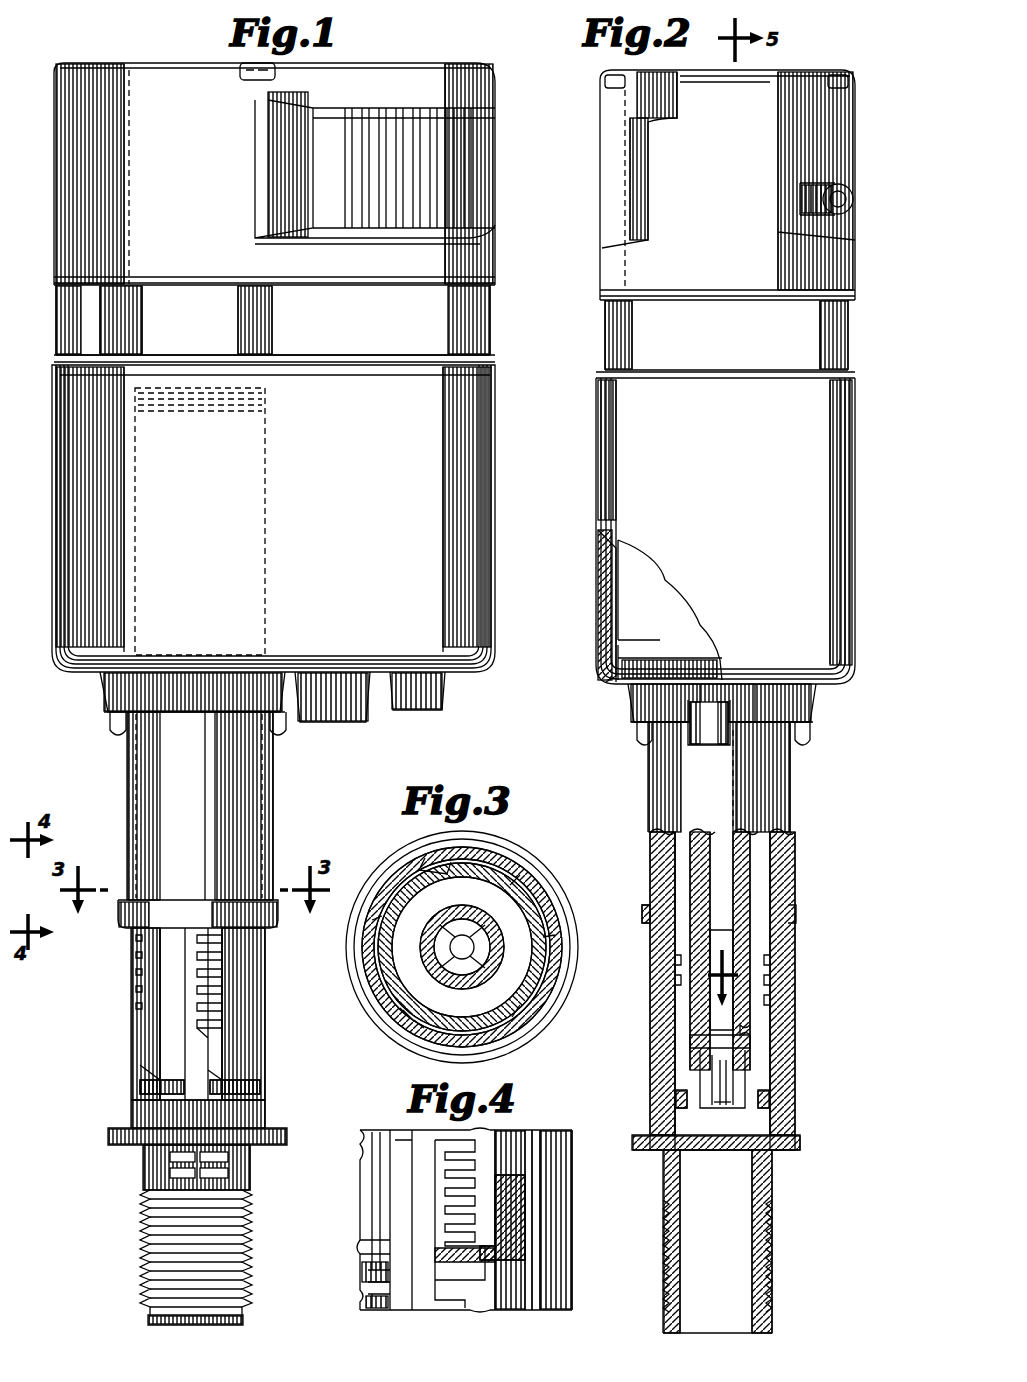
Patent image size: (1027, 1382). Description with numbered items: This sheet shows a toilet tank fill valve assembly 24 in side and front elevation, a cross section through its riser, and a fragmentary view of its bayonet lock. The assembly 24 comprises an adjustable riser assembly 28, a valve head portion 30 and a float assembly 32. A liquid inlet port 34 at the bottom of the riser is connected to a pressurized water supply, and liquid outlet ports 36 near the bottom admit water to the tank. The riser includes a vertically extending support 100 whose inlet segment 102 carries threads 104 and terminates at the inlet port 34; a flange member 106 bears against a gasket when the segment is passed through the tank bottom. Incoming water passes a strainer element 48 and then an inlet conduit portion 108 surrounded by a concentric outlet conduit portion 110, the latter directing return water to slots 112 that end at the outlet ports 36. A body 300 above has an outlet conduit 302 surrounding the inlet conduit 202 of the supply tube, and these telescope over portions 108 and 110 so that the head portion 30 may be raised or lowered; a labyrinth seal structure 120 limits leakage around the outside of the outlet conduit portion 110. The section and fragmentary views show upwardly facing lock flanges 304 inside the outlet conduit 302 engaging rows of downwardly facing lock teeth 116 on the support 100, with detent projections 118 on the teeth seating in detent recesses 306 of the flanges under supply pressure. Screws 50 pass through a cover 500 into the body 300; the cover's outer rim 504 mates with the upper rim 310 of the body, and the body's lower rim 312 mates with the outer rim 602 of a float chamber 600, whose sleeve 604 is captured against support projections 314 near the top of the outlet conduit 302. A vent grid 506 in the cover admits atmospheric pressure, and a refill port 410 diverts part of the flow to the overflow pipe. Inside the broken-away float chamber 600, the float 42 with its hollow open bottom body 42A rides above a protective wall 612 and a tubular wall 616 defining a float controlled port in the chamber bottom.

In FIG. 1, the assembly 24 is at (452, 49).
In FIG. 2, the assembly 24 is at (804, 51).
In FIG. 1, the adjustable riser assembly 28 is at (110, 1006).
In FIG. 2, the adjustable riser assembly 28 is at (804, 880).
In FIG. 3, the adjustable riser assembly 28 is at (527, 834).
In FIG. 1, the valve head portion 30 is at (54, 84).
In FIG. 2, the valve head portion 30 is at (588, 138).
In FIG. 2, the float assembly 32 is at (604, 670).
In FIG. 1, the liquid inlet port 34 is at (148, 1324).
In FIG. 2, the liquid inlet port 34 is at (756, 1326).
In FIG. 1, the liquid outlet ports 36 is at (139, 1088).
In FIG. 2, the liquid outlet ports 36 is at (656, 1093).
In FIG. 2, the float 42 is at (606, 572).
In FIG. 2, the hollow open bottom body 42A is at (612, 594).
In FIG. 2, the strainer element 48 is at (723, 1074).
In FIG. 1, the screws 50 is at (240, 70).
In FIG. 2, the screws 50 is at (605, 78).
In FIG. 1, the support 100 is at (264, 1008).
In FIG. 2, the support 100 is at (780, 1000).
In FIG. 3, the support 100 is at (345, 888).
In FIG. 4, the support 100 is at (390, 1122).
In FIG. 1, the inlet segment 102 is at (143, 1184).
In FIG. 2, the inlet segment 102 is at (778, 1178).
In FIG. 1, the threads 104 is at (135, 1254).
In FIG. 2, the threads 104 is at (770, 1242).
In FIG. 1, the flange member 106 is at (108, 1142).
In FIG. 2, the flange member 106 is at (800, 1145).
In FIG. 1, the inlet conduit portion 108 is at (158, 1076).
In FIG. 2, the inlet conduit portion 108 is at (775, 948).
In FIG. 3, the inlet conduit portion 108 is at (484, 912).
In FIG. 1, the outlet conduit portion 110 is at (243, 1038).
In FIG. 2, the outlet conduit portion 110 is at (772, 1012).
In FIG. 3, the outlet conduit portion 110 is at (518, 860).
In FIG. 4, the outlet conduit portion 110 is at (503, 1126).
In FIG. 2, the slots 112 is at (780, 1034).
In FIG. 3, the slots 112 is at (408, 1025).
In FIG. 1, the lock teeth 116 is at (143, 992).
In FIG. 2, the lock teeth 116 is at (650, 985).
In FIG. 3, the lock teeth 116 is at (434, 840).
In FIG. 4, the lock teeth 116 is at (498, 1200).
In FIG. 4, the detent projections 118 is at (410, 1178).
In FIG. 1, the labyrinth seal structure 120 is at (270, 394).
In FIG. 2, the inlet conduit 202 is at (748, 860).
In FIG. 3, the inlet conduit 202 is at (450, 962).
In FIG. 1, the body 300 is at (54, 346).
In FIG. 2, the body 300 is at (848, 348).
In FIG. 1, the outlet conduit 302 is at (126, 792).
In FIG. 2, the outlet conduit 302 is at (795, 816).
In FIG. 3, the outlet conduit 302 is at (552, 1022).
In FIG. 4, the outlet conduit 302 is at (360, 1152).
In FIG. 2, the lock flanges 304 is at (791, 918).
In FIG. 3, the lock flanges 304 is at (576, 926).
In FIG. 4, the lock flanges 304 is at (376, 1260).
In FIG. 4, the detent recesses 306 is at (426, 1240).
In FIG. 1, the upper rim 310 is at (498, 286).
In FIG. 2, the upper rim 310 is at (855, 292).
In FIG. 1, the lower rim 312 is at (498, 362).
In FIG. 2, the lower rim 312 is at (852, 378).
In FIG. 1, the support projections 314 is at (112, 720).
In FIG. 2, the support projections 314 is at (642, 740).
In FIG. 2, the refill port 410 is at (842, 180).
In FIG. 1, the cover 500 is at (54, 194).
In FIG. 2, the cover 500 is at (856, 150).
In FIG. 1, the outer rim 504 is at (52, 280).
In FIG. 2, the outer rim 504 is at (596, 280).
In FIG. 1, the vent grid 506 is at (412, 106).
In FIG. 1, the float chamber 600 is at (54, 574).
In FIG. 2, the float chamber 600 is at (848, 560).
In FIG. 1, the outer rim 602 is at (52, 375).
In FIG. 2, the outer rim 602 is at (598, 388).
In FIG. 1, the sleeve 604 is at (102, 706).
In FIG. 2, the sleeve 604 is at (624, 692).
In FIG. 1, the protective wall 612 is at (322, 722).
In FIG. 2, the protective wall 612 is at (632, 712).
In FIG. 1, the tubular wall 616 is at (430, 718).
In FIG. 2, the tubular wall 616 is at (710, 745).